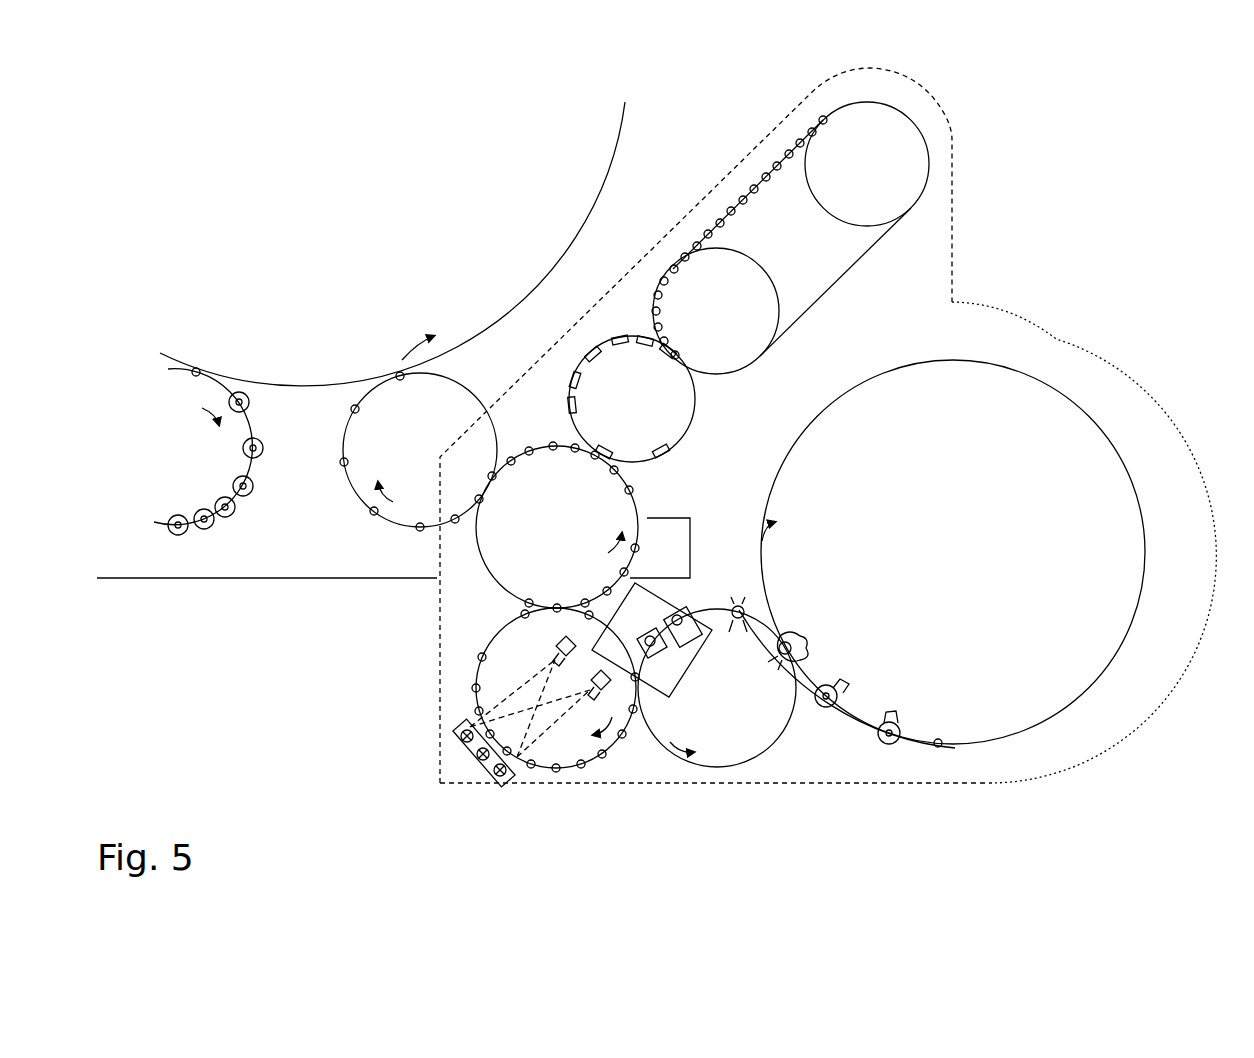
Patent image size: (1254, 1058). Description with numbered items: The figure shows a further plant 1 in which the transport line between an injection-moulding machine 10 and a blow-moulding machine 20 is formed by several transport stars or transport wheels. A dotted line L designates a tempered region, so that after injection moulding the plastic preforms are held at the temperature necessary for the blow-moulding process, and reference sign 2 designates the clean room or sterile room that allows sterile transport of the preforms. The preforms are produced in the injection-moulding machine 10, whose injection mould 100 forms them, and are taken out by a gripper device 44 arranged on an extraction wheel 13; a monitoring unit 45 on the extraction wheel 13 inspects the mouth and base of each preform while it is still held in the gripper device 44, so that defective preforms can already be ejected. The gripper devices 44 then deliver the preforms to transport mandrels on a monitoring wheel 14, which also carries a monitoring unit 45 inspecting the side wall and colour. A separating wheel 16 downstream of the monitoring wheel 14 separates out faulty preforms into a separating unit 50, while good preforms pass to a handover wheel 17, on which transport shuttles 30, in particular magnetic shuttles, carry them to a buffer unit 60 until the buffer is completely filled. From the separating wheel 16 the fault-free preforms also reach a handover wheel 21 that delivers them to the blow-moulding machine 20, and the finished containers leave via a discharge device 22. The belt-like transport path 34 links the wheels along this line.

The labelling machine 1 is at (280, 666).
The clean room 2 is at (940, 282).
The injection-moulding machine 10 is at (1112, 631).
The extraction wheel 13 is at (702, 766).
The monitoring wheel 14 is at (505, 639).
The separating wheel 16 is at (496, 553).
The handover wheel 17 is at (686, 398).
The blow-moulding machine 20 is at (612, 138).
The handover wheel 21 is at (445, 383).
The discharge device 22 is at (240, 466).
The transport shuttles 30 is at (590, 352).
The transport belt 34 is at (356, 492).
The gripper device 44 is at (740, 604).
The monitoring unit 45 is at (651, 606).
The separating unit 50 is at (681, 531).
The buffer unit 60 is at (905, 201).
The injection mould 100 is at (888, 748).
The tempered region L is at (437, 684).